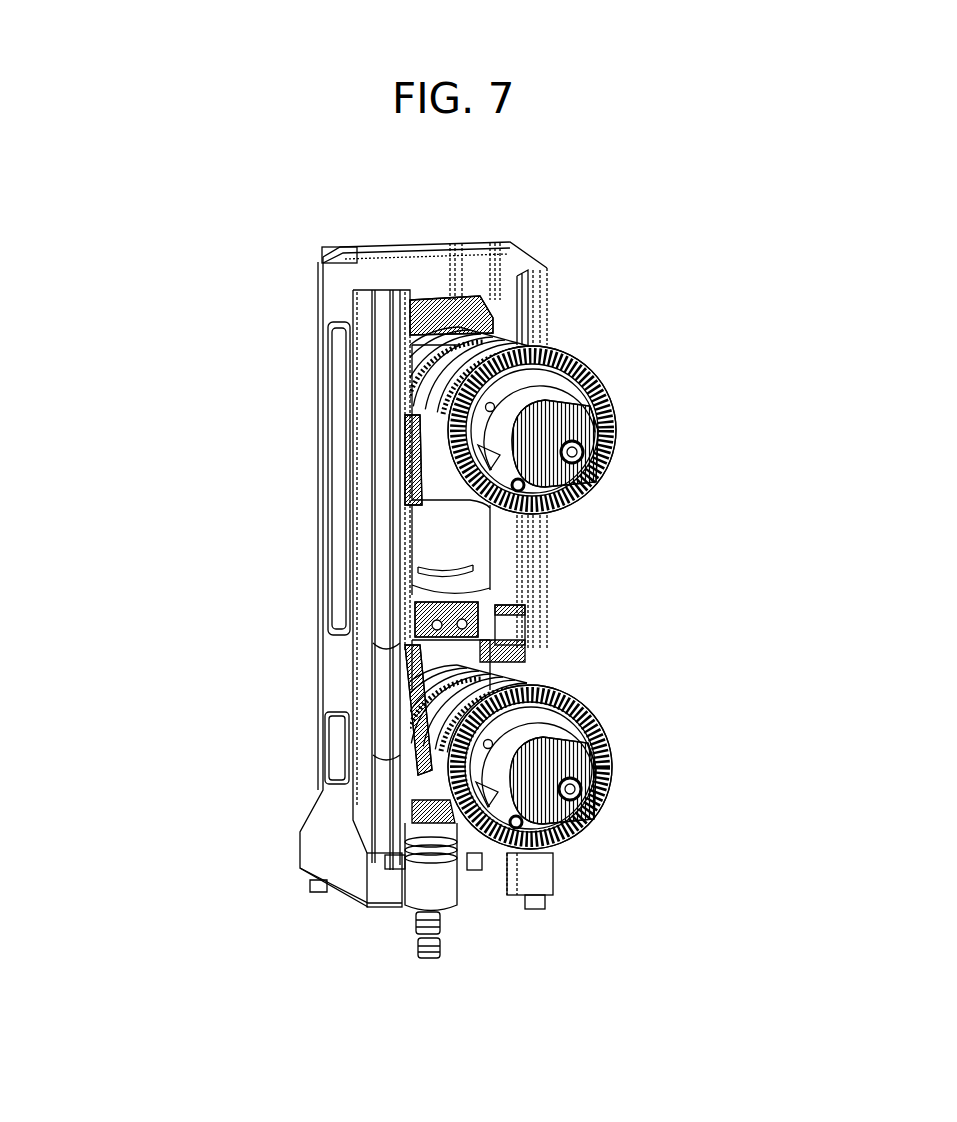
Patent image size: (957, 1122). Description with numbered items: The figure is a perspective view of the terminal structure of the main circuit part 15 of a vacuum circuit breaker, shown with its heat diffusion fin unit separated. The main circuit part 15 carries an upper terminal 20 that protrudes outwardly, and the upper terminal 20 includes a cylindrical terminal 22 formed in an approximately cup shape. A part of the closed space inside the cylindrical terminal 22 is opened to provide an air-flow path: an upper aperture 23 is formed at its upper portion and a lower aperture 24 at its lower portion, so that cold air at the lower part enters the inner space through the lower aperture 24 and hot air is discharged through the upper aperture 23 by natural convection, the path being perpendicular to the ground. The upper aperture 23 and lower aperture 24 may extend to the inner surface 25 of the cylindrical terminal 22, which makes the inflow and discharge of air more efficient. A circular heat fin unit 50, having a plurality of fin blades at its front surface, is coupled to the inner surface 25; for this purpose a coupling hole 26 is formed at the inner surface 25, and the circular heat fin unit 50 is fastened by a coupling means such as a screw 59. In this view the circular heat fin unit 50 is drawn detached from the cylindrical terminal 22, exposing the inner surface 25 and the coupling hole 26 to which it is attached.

The main circuit part 15 is at (325, 448).
The upper terminal 20 is at (583, 362).
The cylindrical terminal 22 is at (415, 390).
The upper aperture 23 is at (505, 318).
The lower aperture 24 is at (567, 503).
The inner surface 25 is at (410, 443).
The coupling hole 26 is at (492, 406).
The circular heat fin unit 50 is at (612, 448).
The screw 59 is at (603, 476).